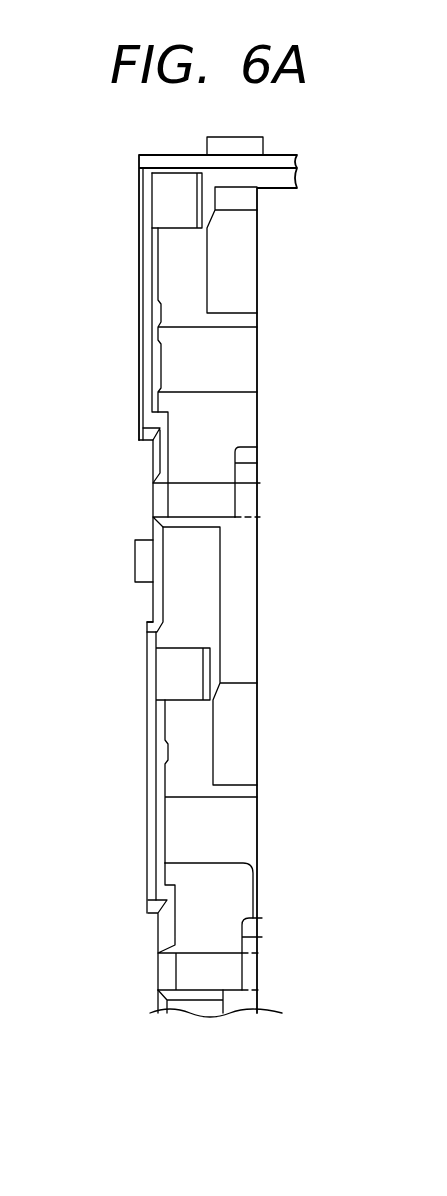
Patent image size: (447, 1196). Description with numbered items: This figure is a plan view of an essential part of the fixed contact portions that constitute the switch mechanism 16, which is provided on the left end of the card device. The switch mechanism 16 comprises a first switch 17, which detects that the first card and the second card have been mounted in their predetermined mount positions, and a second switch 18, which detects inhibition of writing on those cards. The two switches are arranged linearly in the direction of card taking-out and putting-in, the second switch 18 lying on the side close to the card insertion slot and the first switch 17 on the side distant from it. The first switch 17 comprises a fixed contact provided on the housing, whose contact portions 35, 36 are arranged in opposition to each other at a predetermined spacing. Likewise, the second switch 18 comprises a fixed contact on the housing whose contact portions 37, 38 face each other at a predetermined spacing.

The switch mechanism 16 is at (98, 532).
The first switch 17 is at (63, 197).
The second switch 18 is at (72, 667).
The contact portion 35 is at (165, 206).
The contact portion 36 is at (182, 363).
The contact portion 37 is at (173, 678).
The contact portion 38 is at (187, 832).